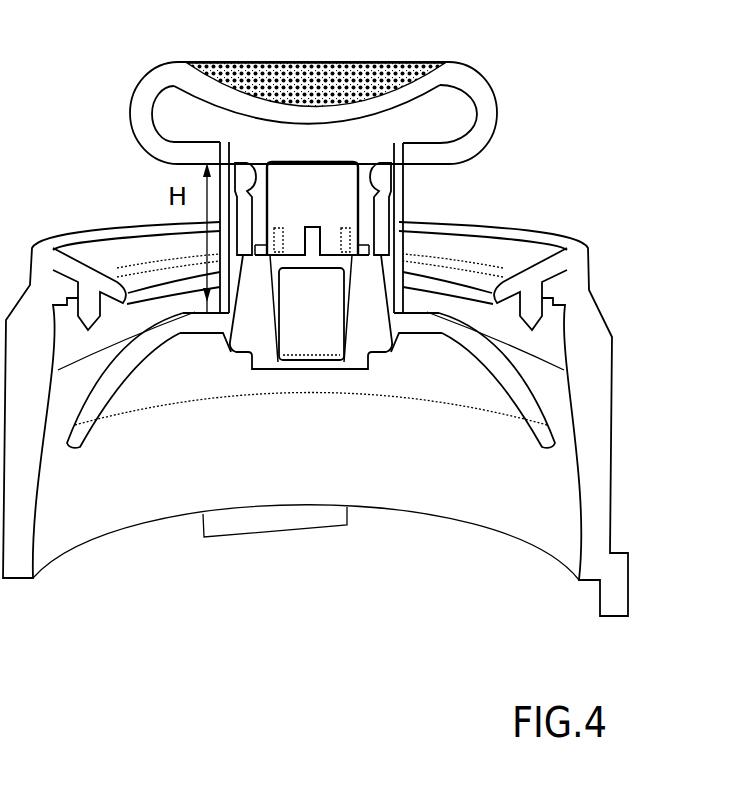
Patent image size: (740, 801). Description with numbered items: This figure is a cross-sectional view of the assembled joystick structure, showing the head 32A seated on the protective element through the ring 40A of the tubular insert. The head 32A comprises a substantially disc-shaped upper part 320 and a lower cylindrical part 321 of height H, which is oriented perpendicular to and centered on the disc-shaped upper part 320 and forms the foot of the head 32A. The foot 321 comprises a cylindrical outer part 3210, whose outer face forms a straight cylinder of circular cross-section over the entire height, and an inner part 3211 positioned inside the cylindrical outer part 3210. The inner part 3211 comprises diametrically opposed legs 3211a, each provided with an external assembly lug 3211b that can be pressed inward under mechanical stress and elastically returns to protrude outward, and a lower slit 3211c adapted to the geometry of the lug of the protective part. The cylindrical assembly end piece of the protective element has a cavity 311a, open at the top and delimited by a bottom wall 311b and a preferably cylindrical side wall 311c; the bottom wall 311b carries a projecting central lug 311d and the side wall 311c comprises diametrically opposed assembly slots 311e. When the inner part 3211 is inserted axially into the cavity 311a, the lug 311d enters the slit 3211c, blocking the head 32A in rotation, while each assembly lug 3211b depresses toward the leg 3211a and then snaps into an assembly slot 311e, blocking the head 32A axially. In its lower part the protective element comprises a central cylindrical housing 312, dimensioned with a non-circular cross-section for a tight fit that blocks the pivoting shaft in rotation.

The head 32A is at (532, 107).
The disc-shaped upper part 320 is at (474, 92).
The assembly slots 311e is at (220, 137).
The cavity 311a is at (366, 188).
The lower cylindrical part 321 is at (336, 310).
The cylindrical outer part 3210 is at (405, 212).
The inner part 3211 is at (437, 247).
The legs 3211a is at (270, 258).
The assembly lug 3211b is at (244, 220).
The lower slit 3211c is at (340, 194).
The bottom wall 311b is at (285, 240).
The side wall 311c is at (385, 262).
The projecting central lug 311d is at (313, 255).
The central cylindrical housing 312 is at (311, 374).
The ring 40A is at (530, 243).